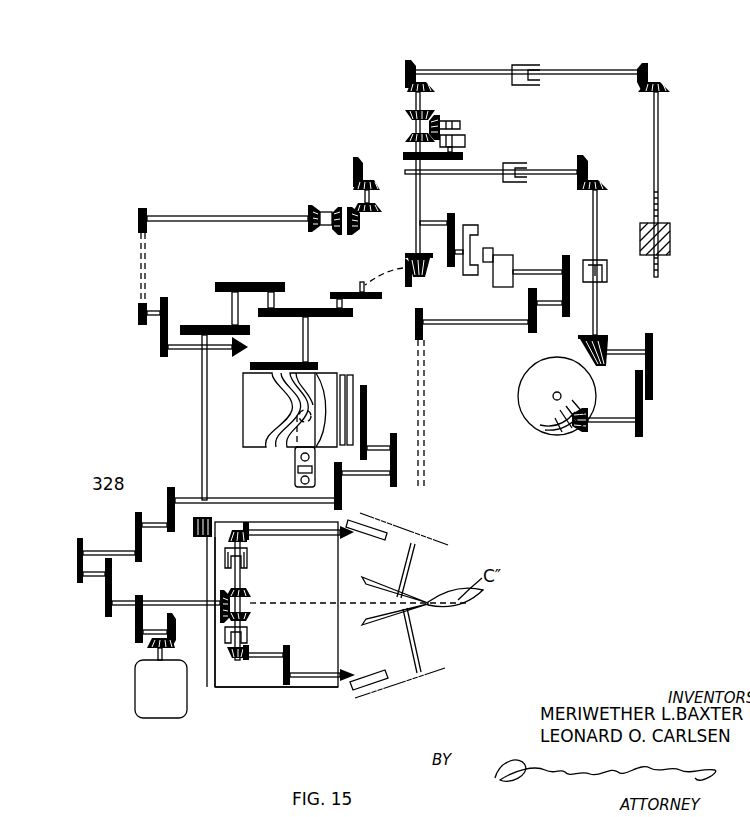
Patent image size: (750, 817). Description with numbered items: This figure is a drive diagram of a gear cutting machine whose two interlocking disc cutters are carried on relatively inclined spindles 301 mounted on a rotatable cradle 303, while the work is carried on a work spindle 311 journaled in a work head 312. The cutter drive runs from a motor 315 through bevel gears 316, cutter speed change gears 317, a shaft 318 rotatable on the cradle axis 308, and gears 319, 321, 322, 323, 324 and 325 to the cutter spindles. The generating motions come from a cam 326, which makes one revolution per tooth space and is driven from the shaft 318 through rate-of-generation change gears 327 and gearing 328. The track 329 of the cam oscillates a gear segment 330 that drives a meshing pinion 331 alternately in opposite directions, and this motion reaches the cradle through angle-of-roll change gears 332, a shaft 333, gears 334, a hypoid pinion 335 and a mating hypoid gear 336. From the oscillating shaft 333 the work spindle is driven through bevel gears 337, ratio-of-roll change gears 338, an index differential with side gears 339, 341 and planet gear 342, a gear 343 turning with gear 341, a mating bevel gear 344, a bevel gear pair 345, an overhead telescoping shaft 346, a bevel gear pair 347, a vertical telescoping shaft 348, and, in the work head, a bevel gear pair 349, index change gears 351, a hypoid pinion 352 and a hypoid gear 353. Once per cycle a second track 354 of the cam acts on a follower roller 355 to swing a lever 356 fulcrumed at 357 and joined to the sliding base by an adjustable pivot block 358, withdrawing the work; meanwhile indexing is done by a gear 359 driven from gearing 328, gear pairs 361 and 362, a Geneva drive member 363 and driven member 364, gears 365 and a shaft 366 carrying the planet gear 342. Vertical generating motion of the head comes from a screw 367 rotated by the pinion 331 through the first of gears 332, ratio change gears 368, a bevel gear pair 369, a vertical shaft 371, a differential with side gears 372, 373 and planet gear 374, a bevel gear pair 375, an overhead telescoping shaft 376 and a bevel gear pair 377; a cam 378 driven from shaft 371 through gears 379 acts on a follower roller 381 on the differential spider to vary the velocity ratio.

The spindles 301 is at (410, 640).
The cradle 303 is at (307, 690).
The cradle axis 308 is at (338, 605).
The work spindle 311 is at (555, 395).
The work head 312 is at (668, 238).
The motor 315 is at (161, 689).
The bevel gears 316 is at (212, 680).
The cutter speed change gears 317 is at (165, 625).
The shaft 318 is at (185, 602).
The gears 319 is at (240, 560).
The gear 321 is at (226, 614).
The gear 322 is at (240, 652).
The gear 323 is at (285, 668).
The gear 324 is at (375, 678).
The gear 325 is at (428, 682).
The cam 326 is at (248, 410).
The rate-of-generation change gears 327 is at (105, 595).
The gearing 328 is at (342, 490).
The track 329 is at (286, 406).
The gear segment 330 is at (248, 365).
The pinion 331 is at (290, 370).
The angle-of-roll change gears 332 is at (256, 284).
The shaft 333 is at (230, 312).
The gears 334 is at (200, 345).
The hypoid pinion 335 is at (166, 500).
The hypoid gear 336 is at (210, 540).
The bevel gears 337 is at (248, 348).
The cradle-to-work ratio-of-roll change gears 338 is at (160, 345).
The side gear 339 is at (300, 216).
The side gear 341 is at (330, 230).
The planet gear 342 is at (318, 212).
The gear 343 is at (352, 238).
The bevel gear 344 is at (358, 204).
The bevel gear pair 345 is at (354, 182).
The overhead telescoping shaft 346 is at (497, 168).
The bevel gear pair 347 is at (587, 160).
The vertical telescoping shaft 348 is at (598, 215).
The bevel gear pair 349 is at (597, 335).
The index change gears 351 is at (643, 420).
The hypoid pinion 352 is at (582, 430).
The hypoid gear 353 is at (552, 418).
The track 354 is at (367, 400).
The cam follower roller 355 is at (310, 414).
The lever 356 is at (298, 481).
The fulcrum 357 is at (320, 503).
The adjustable pivot block 358 is at (298, 458).
The gear 359 is at (422, 336).
The gear pair 361 is at (532, 322).
The gear pair 362 is at (545, 285).
The drive member 363 is at (497, 255).
The driven member 364 is at (474, 236).
The gears 365 is at (447, 244).
The shaft 366 is at (394, 240).
The vertical screw 367 is at (660, 178).
The cradle-rotation-to-vertical-motion ratio change gears 368 is at (345, 300).
The bevel gear pair 369 is at (413, 272).
The vertical shaft 371 is at (422, 215).
The side gear 372 is at (403, 138).
The side gear 373 is at (405, 115).
The planet gear 374 is at (440, 125).
The bevel gear pair 375 is at (400, 100).
The overhead telescoping shaft 376 is at (518, 66).
The bevel gear pair 377 is at (657, 84).
The cam 378 is at (465, 140).
The gears 379 is at (430, 160).
The follower roller 381 is at (460, 124).